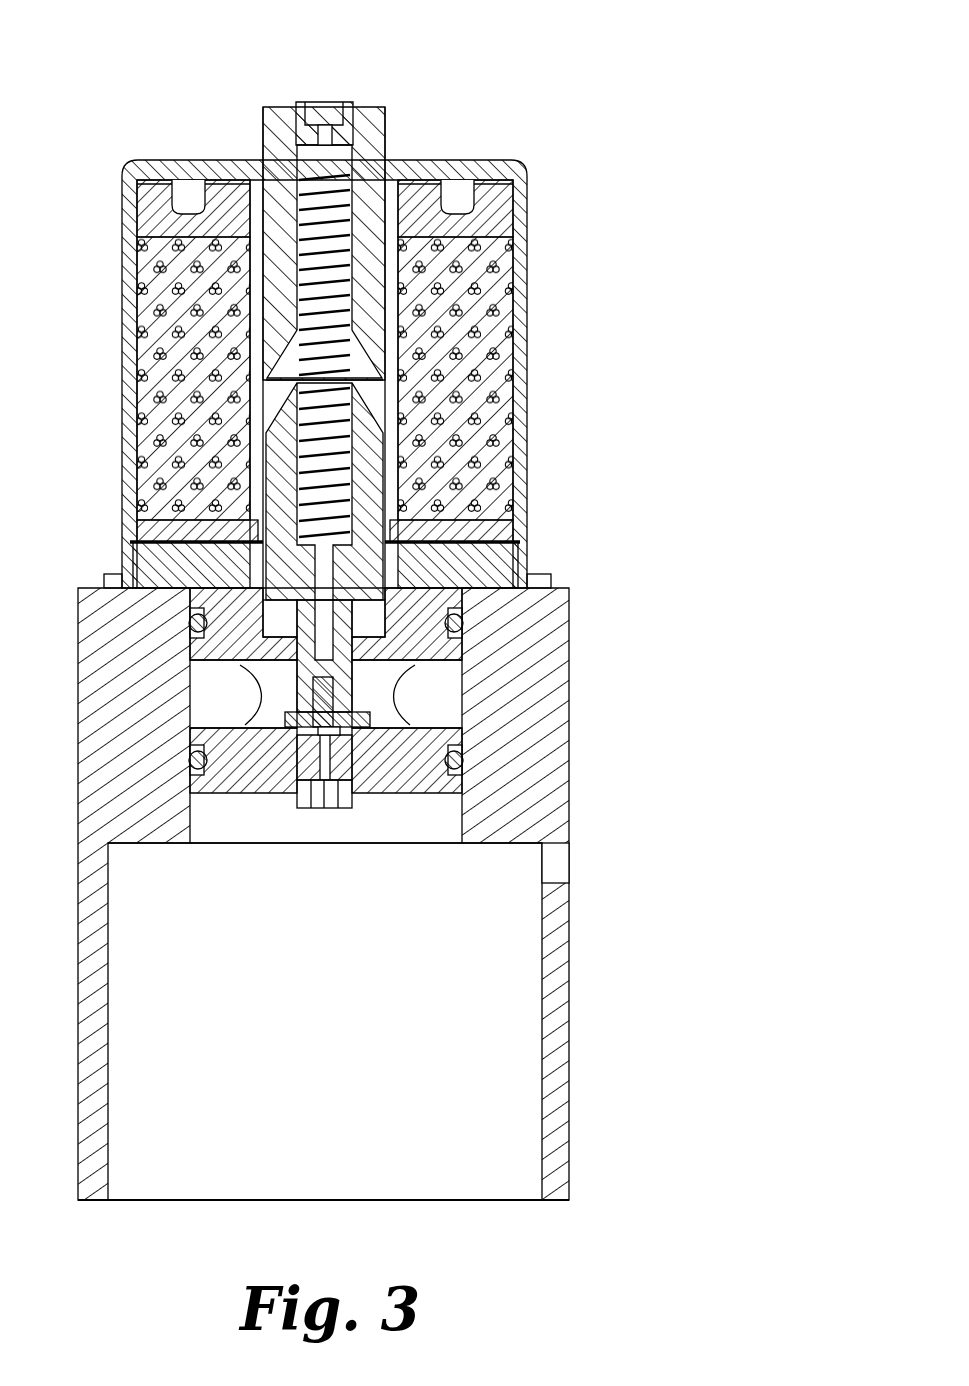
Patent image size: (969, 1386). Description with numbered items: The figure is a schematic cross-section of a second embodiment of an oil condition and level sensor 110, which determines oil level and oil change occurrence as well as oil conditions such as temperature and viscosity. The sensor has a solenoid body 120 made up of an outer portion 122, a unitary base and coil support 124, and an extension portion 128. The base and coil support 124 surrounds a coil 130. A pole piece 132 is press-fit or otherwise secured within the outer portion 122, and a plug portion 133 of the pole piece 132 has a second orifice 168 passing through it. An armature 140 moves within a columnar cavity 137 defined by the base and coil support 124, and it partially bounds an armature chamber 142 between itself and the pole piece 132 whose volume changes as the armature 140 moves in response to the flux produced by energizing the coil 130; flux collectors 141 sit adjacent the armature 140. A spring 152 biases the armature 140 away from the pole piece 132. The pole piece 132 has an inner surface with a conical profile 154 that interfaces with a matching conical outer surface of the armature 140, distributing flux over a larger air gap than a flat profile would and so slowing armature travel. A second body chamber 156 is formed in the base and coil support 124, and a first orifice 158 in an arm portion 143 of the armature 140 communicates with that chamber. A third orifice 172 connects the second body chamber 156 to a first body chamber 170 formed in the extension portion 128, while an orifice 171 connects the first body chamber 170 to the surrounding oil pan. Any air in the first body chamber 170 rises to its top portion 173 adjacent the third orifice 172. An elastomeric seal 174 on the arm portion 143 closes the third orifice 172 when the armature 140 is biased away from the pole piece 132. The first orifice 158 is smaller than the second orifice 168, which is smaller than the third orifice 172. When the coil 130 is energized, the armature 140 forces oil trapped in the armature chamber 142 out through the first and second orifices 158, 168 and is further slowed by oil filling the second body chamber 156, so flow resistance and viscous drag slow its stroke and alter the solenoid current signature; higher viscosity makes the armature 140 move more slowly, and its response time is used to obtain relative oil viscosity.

The oil condition and level sensor 110 is at (517, 75).
The solenoid body 120 is at (562, 320).
The outer portion 122 is at (527, 390).
The unitary base and coil support 124 is at (424, 616).
The extension portion 128 is at (518, 662).
The coil 130 is at (503, 210).
The pole piece 132 is at (386, 125).
The plug portion 133 is at (292, 150).
The columnar cavity 137 is at (445, 212).
The armature 140 is at (406, 455).
The flux collectors 141 is at (195, 548).
The armature chamber 142 is at (413, 388).
The arm portion 143 is at (415, 520).
The spring 152 is at (322, 216).
The conical profile 154 is at (400, 265).
The second body chamber 156 is at (372, 661).
The first orifice 158 is at (263, 678).
The second orifice 168 is at (318, 142).
The first body chamber 170 is at (352, 1046).
The orifice 171 is at (557, 880).
The third orifice 172 is at (327, 762).
The top portion 173 is at (277, 832).
The elastomeric seal 174 is at (300, 730).